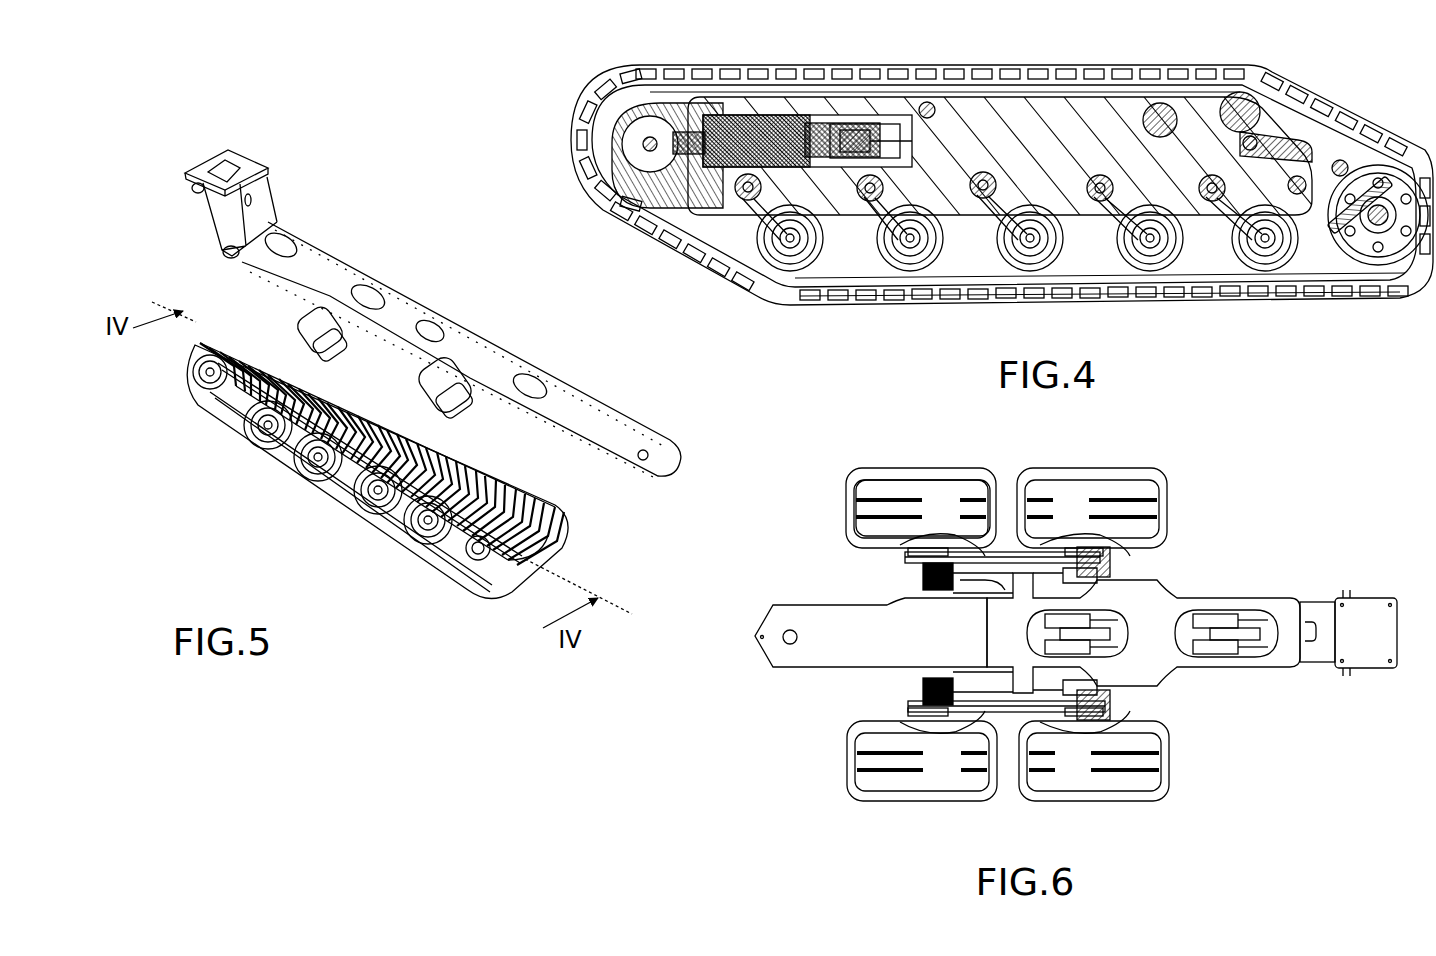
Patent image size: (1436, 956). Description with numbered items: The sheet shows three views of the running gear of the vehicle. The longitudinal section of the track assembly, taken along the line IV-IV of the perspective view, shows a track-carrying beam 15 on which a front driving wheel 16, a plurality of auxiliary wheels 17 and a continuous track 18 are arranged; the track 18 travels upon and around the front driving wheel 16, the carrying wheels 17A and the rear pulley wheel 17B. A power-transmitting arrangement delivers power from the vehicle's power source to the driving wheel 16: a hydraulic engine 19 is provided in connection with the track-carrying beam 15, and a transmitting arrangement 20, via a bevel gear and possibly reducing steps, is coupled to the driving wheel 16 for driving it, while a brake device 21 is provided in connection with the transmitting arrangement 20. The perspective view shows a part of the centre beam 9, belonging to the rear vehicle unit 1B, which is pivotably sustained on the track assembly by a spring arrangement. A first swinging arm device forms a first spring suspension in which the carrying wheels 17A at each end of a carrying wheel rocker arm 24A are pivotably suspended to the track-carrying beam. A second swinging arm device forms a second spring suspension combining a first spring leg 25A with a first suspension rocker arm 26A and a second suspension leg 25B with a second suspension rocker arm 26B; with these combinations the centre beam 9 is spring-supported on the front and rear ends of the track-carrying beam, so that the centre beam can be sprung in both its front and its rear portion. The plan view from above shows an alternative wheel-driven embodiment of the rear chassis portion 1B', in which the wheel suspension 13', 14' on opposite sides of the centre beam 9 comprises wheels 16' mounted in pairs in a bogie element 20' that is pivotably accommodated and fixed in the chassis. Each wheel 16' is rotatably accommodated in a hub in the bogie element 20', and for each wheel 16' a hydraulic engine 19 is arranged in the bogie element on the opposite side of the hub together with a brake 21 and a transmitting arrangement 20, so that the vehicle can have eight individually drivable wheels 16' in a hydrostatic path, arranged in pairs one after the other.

In FIG. 5, the rear vehicle unit 1B is at (293, 204).
In FIG. 5, the centre beam 9 is at (455, 335).
In FIG. 4, the track-carrying beam 15 is at (1023, 190).
In FIG. 5, the track-carrying beam 15 is at (260, 395).
In FIG. 4, the front driving wheel 16 is at (987, 155).
In FIG. 5, the front driving wheel 16 is at (178, 395).
In FIG. 4, the auxiliary wheels 17 is at (1185, 250).
In FIG. 5, the carrying wheels 17A is at (312, 488).
In FIG. 5, the rear pulley wheel 17B is at (450, 557).
In FIG. 4, the continuous track 18 is at (1053, 63).
In FIG. 4, the hydraulic engine 19 is at (844, 124).
In FIG. 6, the hydraulic engine 19 is at (921, 568).
In FIG. 4, the transmitting arrangement 20 is at (723, 89).
In FIG. 6, the transmitting arrangement 20 is at (1007, 633).
In FIG. 4, the brake device 21 is at (790, 116).
In FIG. 6, the brake device 21 is at (912, 553).
In FIG. 5, the carrying wheel rocker arm 24A is at (268, 430).
In FIG. 5, the first spring leg 25A is at (330, 335).
In FIG. 5, the second suspension leg 25B is at (462, 388).
In FIG. 5, the first suspension rocker arm 26A is at (302, 316).
In FIG. 5, the second suspension rocker arm 26B is at (430, 378).
In FIG. 6, the wheeled unit 1B' is at (1042, 656).
In FIG. 6, the wheel suspension 13' is at (1063, 494).
In FIG. 6, the wheel suspension 14' is at (1073, 761).
In FIG. 6, the wheels 16' is at (985, 635).
In FIG. 6, the bogie element 20' is at (1005, 636).